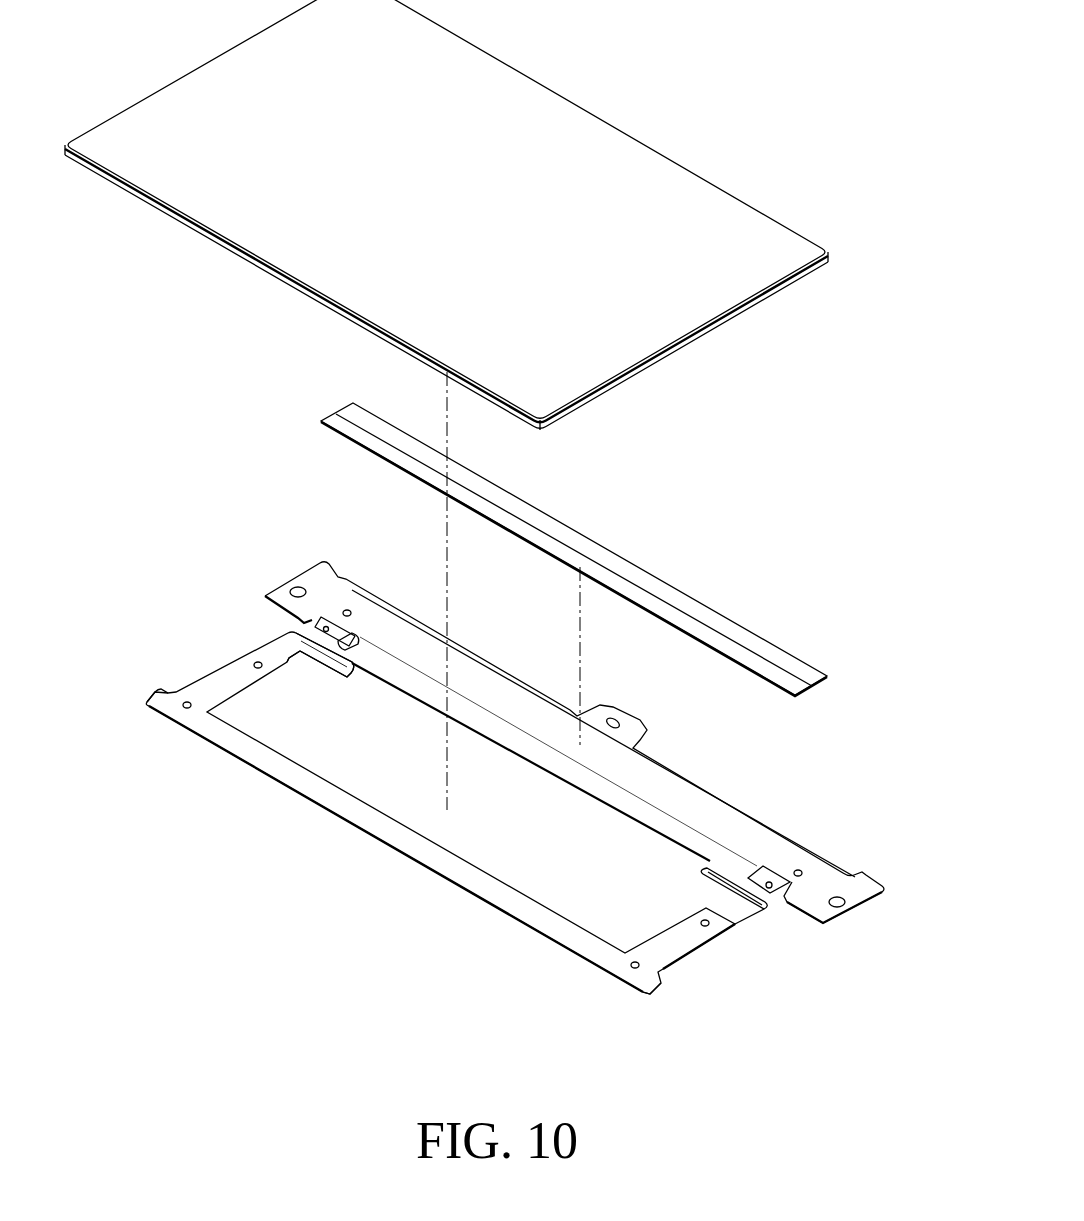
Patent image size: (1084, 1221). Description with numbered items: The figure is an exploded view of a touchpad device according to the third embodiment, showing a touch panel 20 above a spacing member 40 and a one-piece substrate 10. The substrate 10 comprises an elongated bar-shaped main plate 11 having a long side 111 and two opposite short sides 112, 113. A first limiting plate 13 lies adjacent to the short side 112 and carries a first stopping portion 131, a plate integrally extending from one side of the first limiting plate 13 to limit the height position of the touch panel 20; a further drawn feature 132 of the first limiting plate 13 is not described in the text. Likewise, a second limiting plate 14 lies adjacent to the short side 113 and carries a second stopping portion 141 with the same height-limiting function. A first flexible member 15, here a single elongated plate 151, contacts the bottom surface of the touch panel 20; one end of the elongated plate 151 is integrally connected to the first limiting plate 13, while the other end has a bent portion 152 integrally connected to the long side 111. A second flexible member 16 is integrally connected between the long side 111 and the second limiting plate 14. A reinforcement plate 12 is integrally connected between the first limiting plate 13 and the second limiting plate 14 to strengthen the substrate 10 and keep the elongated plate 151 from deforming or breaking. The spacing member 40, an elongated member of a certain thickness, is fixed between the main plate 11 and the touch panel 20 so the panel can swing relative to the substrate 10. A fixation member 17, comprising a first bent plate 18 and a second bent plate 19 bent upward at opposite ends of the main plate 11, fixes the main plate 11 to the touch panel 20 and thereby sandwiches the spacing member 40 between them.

The substrate 10 is at (838, 838).
The main plate 11 is at (668, 785).
The long side 111 is at (607, 808).
The short side 112 is at (291, 580).
The short side 113 is at (855, 912).
The reinforcement plate 12 is at (428, 833).
The first limiting plate 13 is at (428, 833).
The first stopping portion 131 is at (152, 692).
The notch of left side bar 132 is at (286, 662).
The second limiting plate 14 is at (703, 955).
The second stopping portion 141 is at (660, 995).
The first flexible member 15 is at (310, 675).
The elongated plate 151 is at (300, 640).
The bent portion 152 is at (353, 675).
The second flexible member 16 is at (768, 890).
The fixation member 17 is at (565, 700).
The first bent plate 18 is at (348, 626).
The second bent plate 19 is at (770, 870).
The touch panel 20 is at (637, 135).
The spacing member 40 is at (698, 598).